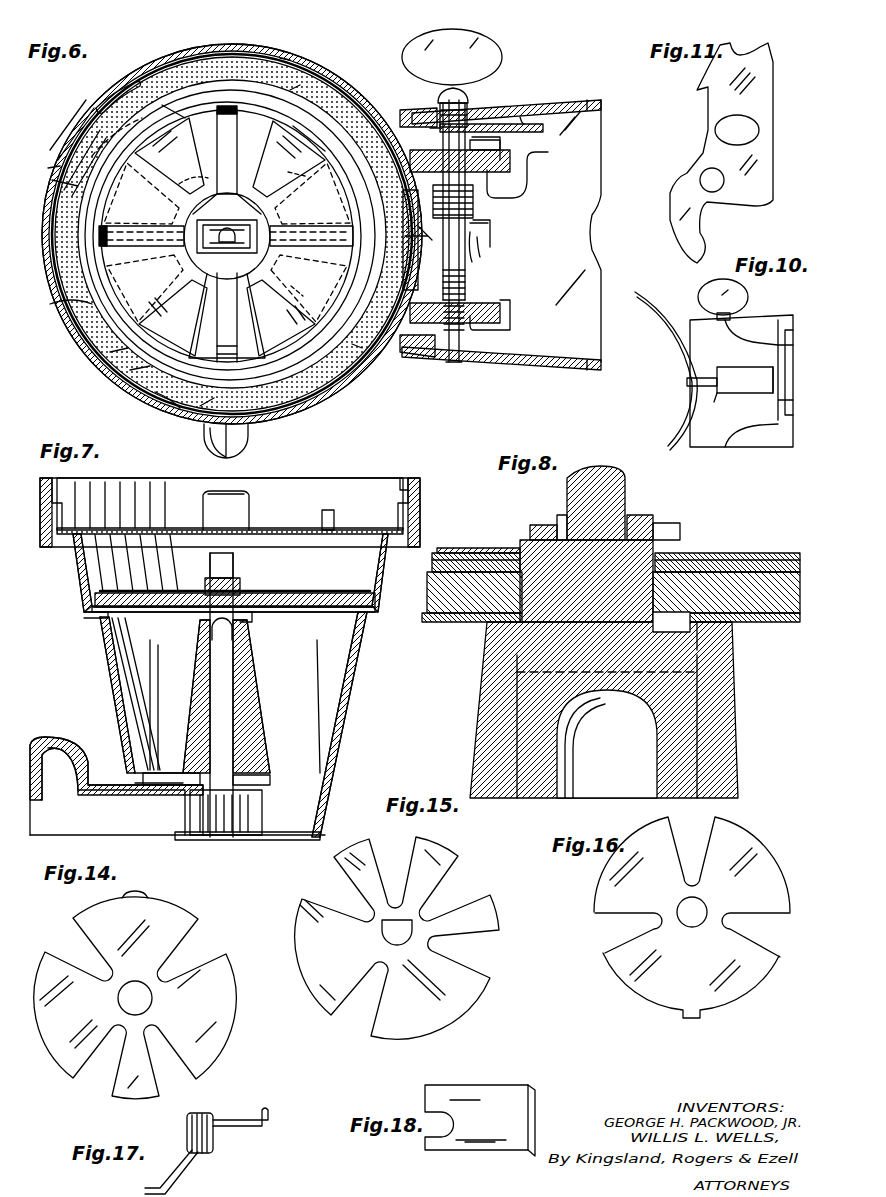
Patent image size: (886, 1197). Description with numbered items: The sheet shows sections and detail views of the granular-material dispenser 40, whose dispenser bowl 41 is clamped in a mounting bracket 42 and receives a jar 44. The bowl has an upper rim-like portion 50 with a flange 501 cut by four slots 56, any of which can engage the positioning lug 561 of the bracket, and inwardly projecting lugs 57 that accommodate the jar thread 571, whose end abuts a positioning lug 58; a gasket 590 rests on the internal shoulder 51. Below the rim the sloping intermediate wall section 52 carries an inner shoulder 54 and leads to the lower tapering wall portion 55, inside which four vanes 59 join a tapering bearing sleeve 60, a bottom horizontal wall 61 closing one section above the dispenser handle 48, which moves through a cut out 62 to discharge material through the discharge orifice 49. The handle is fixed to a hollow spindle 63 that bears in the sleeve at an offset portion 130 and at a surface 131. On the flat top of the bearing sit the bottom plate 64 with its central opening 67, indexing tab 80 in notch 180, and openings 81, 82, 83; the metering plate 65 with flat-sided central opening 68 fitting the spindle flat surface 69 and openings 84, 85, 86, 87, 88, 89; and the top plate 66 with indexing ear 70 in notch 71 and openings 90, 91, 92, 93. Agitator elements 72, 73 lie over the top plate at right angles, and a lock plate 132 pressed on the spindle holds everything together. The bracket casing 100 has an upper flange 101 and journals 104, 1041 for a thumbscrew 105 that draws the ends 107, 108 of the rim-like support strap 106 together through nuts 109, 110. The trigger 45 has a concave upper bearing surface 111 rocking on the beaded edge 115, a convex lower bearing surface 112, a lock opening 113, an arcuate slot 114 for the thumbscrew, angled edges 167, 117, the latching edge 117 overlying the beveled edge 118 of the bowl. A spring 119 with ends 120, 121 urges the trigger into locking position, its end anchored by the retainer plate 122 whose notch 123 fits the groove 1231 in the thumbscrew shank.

In FIG. 6, the dispenser 40 is at (380, 380).
In FIG. 6, the dispenser bowl 41 is at (66, 352).
In FIG. 7, the dispenser bowl 41 is at (384, 470).
In FIG. 6, the mounting bracket 42 is at (601, 86).
In FIG. 6, the jar 44 is at (106, 148).
In FIG. 6, the trigger 45 is at (481, 252).
In FIG. 11, the trigger 45 is at (680, 200).
In FIG. 10, the trigger 45 is at (686, 390).
In FIG. 6, the dispenser handle 48 is at (252, 440).
In FIG. 7, the dispenser handle 48 is at (54, 744).
In FIG. 7, the discharge orifice 49 is at (310, 840).
In FIG. 6, the upper rim-like portion 50 is at (130, 390).
In FIG. 7, the upper rim-like portion 50 is at (172, 478).
In FIG. 7, the internal shoulder 51 is at (380, 540).
In FIG. 7, the sloping intermediate wall section 52 is at (78, 572).
In FIG. 7, the inner shoulder 54 is at (104, 612).
In FIG. 7, the lower tapering wall portion 55 is at (335, 720).
In FIG. 6, the slots 56 is at (222, 50).
In FIG. 7, the slots 56 is at (210, 474).
In FIG. 7, the inwardly projecting lug 57 is at (122, 478).
In FIG. 6, the positioning lug 58 is at (108, 84).
In FIG. 7, the positioning lug 58 is at (334, 528).
In FIG. 7, the vanes 59 is at (310, 650).
In FIG. 7, the bearing sleeve 60 is at (193, 686).
In FIG. 8, the bearing sleeve 60 is at (486, 700).
In FIG. 7, the bottom horizontal wall 61 is at (138, 758).
In FIG. 7, the cut out 62 is at (156, 820).
In FIG. 6, the spindle 63 is at (215, 280).
In FIG. 7, the spindle 63 is at (262, 680).
In FIG. 8, the spindle 63 is at (680, 740).
In FIG. 7, the bottom plate 64 is at (170, 612).
In FIG. 8, the bottom plate 64 is at (444, 625).
In FIG. 16, the bottom plate 64 is at (607, 984).
In FIG. 6, the metering plate 65 is at (110, 352).
In FIG. 7, the metering plate 65 is at (300, 590).
In FIG. 8, the metering plate 65 is at (756, 580).
In FIG. 15, the metering plate 65 is at (472, 1023).
In FIG. 6, the top plate 66 is at (332, 149).
In FIG. 7, the top plate 66 is at (160, 590).
In FIG. 8, the top plate 66 is at (728, 560).
In FIG. 14, the top plate 66 is at (240, 1033).
In FIG. 7, the central opening 67 is at (228, 630).
In FIG. 8, the central opening 67 is at (672, 615).
In FIG. 16, the central opening 67 is at (706, 908).
In FIG. 8, the central opening 68 is at (600, 548).
In FIG. 15, the central opening 68 is at (416, 940).
In FIG. 7, the flat surface 69 is at (255, 616).
In FIG. 8, the flat surface 69 is at (672, 548).
In FIG. 6, the indexing ear 70 is at (215, 116).
In FIG. 7, the indexing ear 70 is at (375, 605).
In FIG. 14, the indexing ear 70 is at (145, 890).
In FIG. 6, the notch 71 is at (290, 60).
In FIG. 7, the notch 71 is at (378, 590).
In FIG. 6, the agitator element 72 is at (150, 262).
In FIG. 7, the agitator element 72 is at (222, 556).
In FIG. 8, the agitator element 72 is at (498, 548).
In FIG. 6, the agitator element 73 is at (300, 85).
In FIG. 7, the agitator element 73 is at (356, 590).
In FIG. 8, the agitator element 73 is at (460, 548).
In FIG. 6, the indexing tab 80 is at (200, 406).
In FIG. 7, the indexing tab 80 is at (93, 598).
In FIG. 16, the indexing tab 80 is at (704, 1012).
In FIG. 6, the opening 81 is at (283, 298).
In FIG. 16, the opening 81 is at (762, 940).
In FIG. 6, the opening 82 is at (172, 110).
In FIG. 7, the opening 82 is at (350, 620).
In FIG. 8, the opening 82 is at (794, 620).
In FIG. 16, the opening 82 is at (700, 830).
In FIG. 6, the opening 83 is at (64, 304).
In FIG. 16, the opening 83 is at (622, 932).
In FIG. 6, the opening 84 is at (303, 296).
In FIG. 15, the opening 84 is at (478, 962).
In FIG. 6, the opening 85 is at (309, 198).
In FIG. 15, the opening 85 is at (460, 892).
In FIG. 6, the opening 86 is at (305, 176).
In FIG. 15, the opening 86 is at (402, 848).
In FIG. 6, the opening 87 is at (182, 180).
In FIG. 15, the opening 87 is at (336, 892).
In FIG. 6, the opening 88 is at (126, 209).
In FIG. 15, the opening 88 is at (330, 966).
In FIG. 6, the opening 89 is at (148, 306).
In FIG. 15, the opening 89 is at (360, 1004).
In FIG. 6, the opening 90 is at (362, 348).
In FIG. 14, the opening 90 is at (178, 1074).
In FIG. 6, the opening 91 is at (292, 156).
In FIG. 14, the opening 91 is at (190, 958).
In FIG. 6, the opening 92 is at (168, 156).
In FIG. 14, the opening 92 is at (80, 948).
In FIG. 6, the opening 93 is at (160, 392).
In FIG. 14, the opening 93 is at (104, 1070).
In FIG. 6, the casing 100 is at (545, 104).
In FIG. 10, the casing 100 is at (748, 322).
In FIG. 10, the upper flange 101 is at (778, 354).
In FIG. 6, the journal 104 is at (466, 360).
In FIG. 6, the thumbscrew 105 is at (486, 66).
In FIG. 10, the thumbscrew 105 is at (702, 294).
In FIG. 6, the rim-like support strap 106 is at (252, 52).
In FIG. 10, the rim-like support strap 106 is at (660, 315).
In FIG. 7, the rim-like support strap 106 is at (412, 500).
In FIG. 6, the strap end 107 is at (516, 150).
In FIG. 6, the strap end 108 is at (512, 320).
In FIG. 6, the nut 109 is at (482, 172).
In FIG. 6, the nut 110 is at (490, 298).
In FIG. 11, the concave upper bearing surface 111 is at (742, 52).
In FIG. 10, the concave upper bearing surface 111 is at (712, 395).
In FIG. 11, the convex lower bearing surface 112 is at (752, 205).
In FIG. 11, the opening 113 is at (718, 190).
In FIG. 6, the arcuate slot 114 is at (430, 250).
In FIG. 11, the arcuate slot 114 is at (758, 122).
In FIG. 10, the beaded edge 115 is at (726, 366).
In FIG. 11, the latching edge 117 is at (700, 98).
In FIG. 7, the beveled edge 118 is at (62, 498).
In FIG. 6, the spring 119 is at (476, 216).
In FIG. 17, the spring 119 is at (214, 1150).
In FIG. 6, the spring end 120 is at (492, 242).
In FIG. 17, the spring end 120 is at (156, 1190).
In FIG. 6, the spring end 121 is at (540, 160).
In FIG. 17, the spring end 121 is at (270, 1114).
In FIG. 6, the retainer plate 122 is at (510, 122).
In FIG. 18, the retainer plate 122 is at (508, 1096).
In FIG. 6, the notch 123 is at (434, 132).
In FIG. 18, the notch 123 is at (436, 1122).
In FIG. 7, the offset portion 130 is at (262, 772).
In FIG. 7, the surface 131 is at (200, 612).
In FIG. 8, the surface 131 is at (700, 645).
In FIG. 6, the lock plate 132 is at (243, 228).
In FIG. 7, the lock plate 132 is at (242, 582).
In FIG. 8, the lock plate 132 is at (660, 520).
In FIG. 11, the angled edge 167 is at (704, 68).
In FIG. 6, the notch 180 is at (298, 402).
In FIG. 7, the notch 180 is at (92, 620).
In FIG. 7, the flange 501 is at (50, 478).
In FIG. 6, the positioning lug 561 is at (358, 258).
In FIG. 10, the positioning lug 561 is at (708, 372).
In FIG. 6, the thread 571 is at (64, 128).
In FIG. 6, the gasket 590 is at (130, 370).
In FIG. 7, the gasket 590 is at (400, 528).
In FIG. 6, the journal 1041 is at (425, 110).
In FIG. 6, the groove 1231 is at (452, 88).